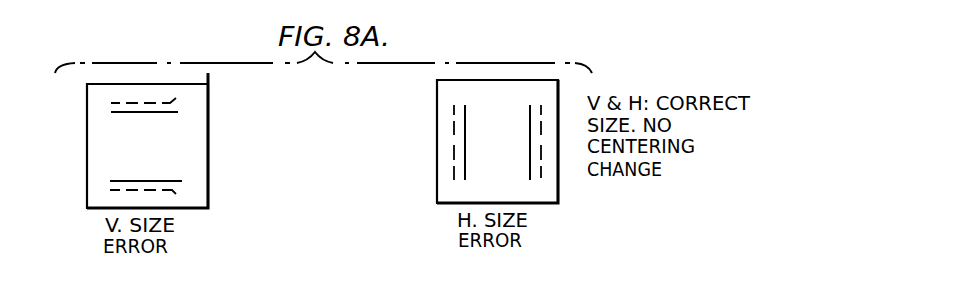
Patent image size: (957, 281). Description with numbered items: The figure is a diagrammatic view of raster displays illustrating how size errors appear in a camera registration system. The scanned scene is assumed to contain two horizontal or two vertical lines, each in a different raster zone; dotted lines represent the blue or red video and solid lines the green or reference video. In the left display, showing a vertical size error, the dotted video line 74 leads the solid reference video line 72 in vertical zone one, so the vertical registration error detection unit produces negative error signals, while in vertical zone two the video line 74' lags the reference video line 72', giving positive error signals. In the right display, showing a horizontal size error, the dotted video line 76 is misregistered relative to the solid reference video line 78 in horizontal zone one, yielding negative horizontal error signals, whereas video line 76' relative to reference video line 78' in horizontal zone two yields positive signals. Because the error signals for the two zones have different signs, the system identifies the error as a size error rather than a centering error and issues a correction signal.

The reference video line 72 is at (144, 125).
The reference video line 72' is at (147, 161).
The video line 74 is at (181, 95).
The video line 74' is at (183, 185).
The video line 76 is at (424, 142).
The video line 76' is at (574, 158).
The reference video line 78 is at (483, 131).
The reference video line 78' is at (505, 148).